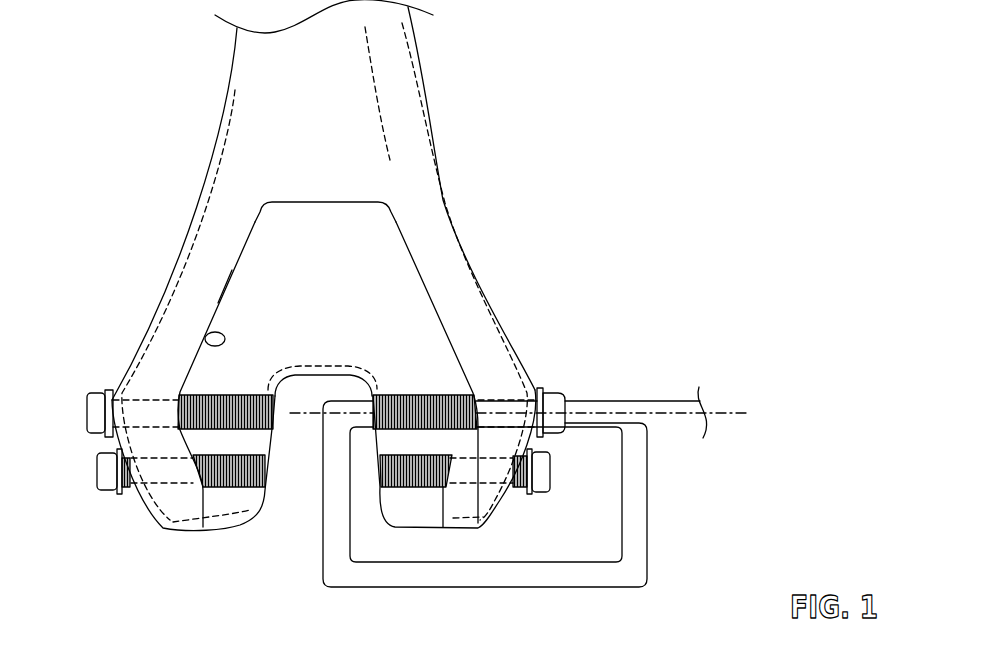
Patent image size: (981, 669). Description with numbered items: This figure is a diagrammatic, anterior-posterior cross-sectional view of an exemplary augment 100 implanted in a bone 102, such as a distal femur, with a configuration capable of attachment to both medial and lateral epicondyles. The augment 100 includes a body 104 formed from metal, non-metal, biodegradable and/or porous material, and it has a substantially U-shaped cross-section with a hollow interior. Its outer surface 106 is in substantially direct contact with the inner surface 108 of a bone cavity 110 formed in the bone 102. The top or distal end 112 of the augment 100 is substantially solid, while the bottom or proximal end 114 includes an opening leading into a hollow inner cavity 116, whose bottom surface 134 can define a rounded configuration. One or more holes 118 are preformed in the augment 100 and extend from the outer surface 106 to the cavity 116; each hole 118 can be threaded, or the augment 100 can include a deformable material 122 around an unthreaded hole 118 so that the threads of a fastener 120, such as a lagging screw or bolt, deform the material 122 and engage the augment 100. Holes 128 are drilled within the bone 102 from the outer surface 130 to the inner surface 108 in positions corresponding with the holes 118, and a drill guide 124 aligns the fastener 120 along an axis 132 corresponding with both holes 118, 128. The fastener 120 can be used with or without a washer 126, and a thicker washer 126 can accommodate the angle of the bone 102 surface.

The augment 100 is at (320, 318).
The bone 102 is at (324, 306).
The body 104 is at (270, 243).
The outer surface 106 is at (225, 287).
The inner surface 108 is at (202, 345).
The bone cavity 110 is at (433, 292).
The distal end 112 is at (324, 192).
The proximal end 114 is at (214, 542).
The inner cavity 116 is at (295, 493).
The holes 118 is at (437, 394).
The fastener 120 is at (658, 423).
The deformable material 122 is at (401, 376).
The drill guide 124 is at (647, 498).
The washer 126 is at (292, 535).
The holes 128 is at (473, 430).
The outer surface 130 is at (228, 80).
The axis 132 is at (733, 413).
The bottom surface 134 is at (310, 375).